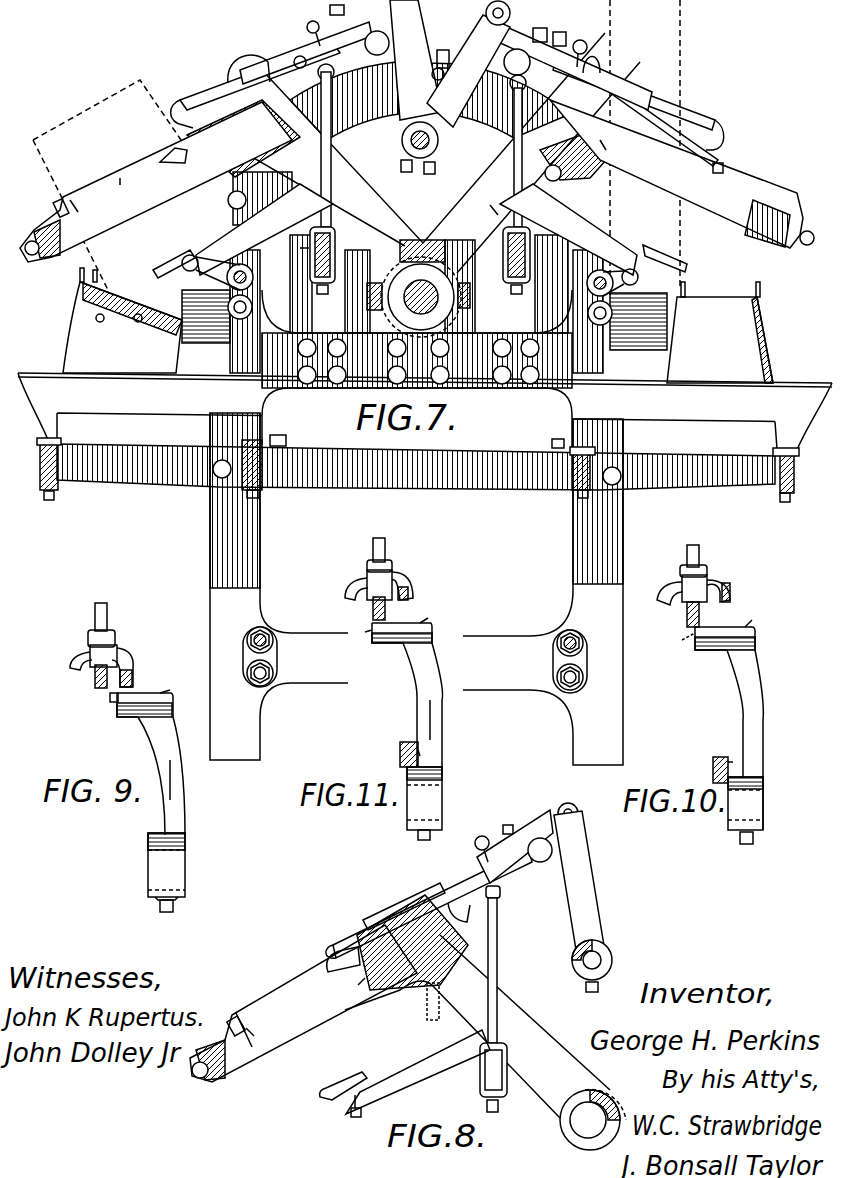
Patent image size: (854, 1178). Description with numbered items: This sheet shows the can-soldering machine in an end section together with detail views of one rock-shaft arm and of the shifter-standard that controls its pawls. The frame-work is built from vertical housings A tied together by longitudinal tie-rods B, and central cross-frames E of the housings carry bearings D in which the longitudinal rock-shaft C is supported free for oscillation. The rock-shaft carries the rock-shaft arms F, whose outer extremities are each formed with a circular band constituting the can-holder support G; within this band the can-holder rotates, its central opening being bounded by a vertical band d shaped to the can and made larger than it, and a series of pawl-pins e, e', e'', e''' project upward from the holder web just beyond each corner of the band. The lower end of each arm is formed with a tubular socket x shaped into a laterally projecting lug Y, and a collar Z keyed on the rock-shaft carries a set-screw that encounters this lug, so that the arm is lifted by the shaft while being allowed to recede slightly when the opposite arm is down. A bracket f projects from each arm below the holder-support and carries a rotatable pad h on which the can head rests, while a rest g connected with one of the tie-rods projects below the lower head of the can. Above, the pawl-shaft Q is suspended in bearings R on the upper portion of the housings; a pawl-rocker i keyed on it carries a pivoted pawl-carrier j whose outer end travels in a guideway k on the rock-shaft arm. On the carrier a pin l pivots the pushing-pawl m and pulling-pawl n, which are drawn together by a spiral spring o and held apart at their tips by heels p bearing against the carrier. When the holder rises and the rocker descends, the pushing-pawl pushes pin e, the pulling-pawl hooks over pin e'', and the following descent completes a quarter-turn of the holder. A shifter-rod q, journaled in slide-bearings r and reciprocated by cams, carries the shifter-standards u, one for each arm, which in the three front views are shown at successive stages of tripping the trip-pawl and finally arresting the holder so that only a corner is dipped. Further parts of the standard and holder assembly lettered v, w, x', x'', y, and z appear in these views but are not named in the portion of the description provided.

In FIG. 7, the vertical housing A is at (425, 382).
In FIG. 11, the vertical housing A is at (304, 735).
In FIG. 7, the tie-rod B is at (60, 465).
In FIG. 11, the tie-rod B is at (246, 638).
In FIG. 7, the rock-shaft C is at (421, 297).
In FIG. 8, the rock-shaft C is at (590, 1120).
In FIG. 7, the bearing D is at (468, 310).
In FIG. 7, the central cross-frame E is at (416, 411).
In FIG. 7, the rock-shaft arm F is at (413, 153).
In FIG. 11, the rock-shaft arm F is at (399, 755).
In FIG. 10, the rock-shaft arm F is at (712, 768).
In FIG. 8, the rock-shaft arm F is at (477, 1006).
In FIG. 7, the can-holder support G is at (417, 181).
In FIG. 8, the can-holder support G is at (303, 1003).
In FIG. 7, the pawl-shaft Q is at (440, 152).
In FIG. 7, the bearing R is at (400, 148).
In FIG. 7, the lug Y is at (460, 272).
In FIG. 8, the lug Y is at (625, 1090).
In FIG. 7, the collar Z is at (375, 312).
In FIG. 7, the vertical band d is at (433, 177).
In FIG. 8, the vertical band d is at (263, 1015).
In FIG. 7, the pawl-pin e is at (724, 171).
In FIG. 7, the pawl-pin e' is at (427, 213).
In FIG. 8, the pawl-pin e' is at (226, 1029).
In FIG. 7, the pawl-pin e'' is at (83, 202).
In FIG. 8, the pawl-pin e'' is at (255, 1036).
In FIG. 7, the pawl-pin e''' is at (617, 148).
In FIG. 8, the pawl-pin e''' is at (352, 985).
In FIG. 7, the bracket f is at (441, 229).
In FIG. 11, the bracket f is at (426, 748).
In FIG. 10, the bracket f is at (734, 757).
In FIG. 8, the bracket f is at (418, 1072).
In FIG. 7, the rest g is at (410, 275).
In FIG. 7, the rotatable pad h is at (170, 262).
In FIG. 8, the rotatable pad h is at (343, 1093).
In FIG. 7, the pawl-rocker i is at (515, 63).
In FIG. 8, the pawl-rocker i is at (583, 897).
In FIG. 7, the pawl-carrier j is at (446, 59).
In FIG. 9, the pawl-carrier j is at (108, 620).
In FIG. 11, the pawl-carrier j is at (385, 550).
In FIG. 10, the pawl-carrier j is at (699, 556).
In FIG. 8, the pawl-carrier j is at (515, 846).
In FIG. 7, the guideway k is at (416, 60).
In FIG. 8, the guideway k is at (462, 918).
In FIG. 7, the pin l is at (444, 23).
In FIG. 9, the pin l is at (88, 636).
In FIG. 11, the pin l is at (367, 564).
In FIG. 10, the pin l is at (680, 569).
In FIG. 8, the pin l is at (508, 825).
In FIG. 7, the pushing-pawl m is at (648, 120).
In FIG. 9, the pushing-pawl m is at (75, 667).
In FIG. 11, the pushing-pawl m is at (353, 596).
In FIG. 10, the pushing-pawl m is at (668, 600).
In FIG. 8, the pushing-pawl m is at (404, 918).
In FIG. 7, the pulling-pawl n is at (173, 164).
In FIG. 9, the pulling-pawl n is at (134, 655).
In FIG. 11, the pulling-pawl n is at (410, 572).
In FIG. 10, the pulling-pawl n is at (730, 600).
In FIG. 8, the pulling-pawl n is at (330, 958).
In FIG. 7, the spiral spring o is at (442, 44).
In FIG. 8, the spiral spring o is at (482, 841).
In FIG. 7, the heel p is at (540, 23).
In FIG. 7, the shifter-rod q is at (430, 170).
In FIG. 7, the slide-bearing r is at (400, 236).
In FIG. 8, the slide-bearing r is at (433, 1001).
In FIG. 7, the shifter-standard u is at (333, 150).
In FIG. 9, the shifter-standard u is at (170, 778).
In FIG. 11, the shifter-standard u is at (428, 720).
In FIG. 8, the shifter-standard u is at (487, 995).
In FIG. 7, the slide v is at (336, 252).
In FIG. 8, the slide v is at (480, 1075).
In FIG. 7, the slide block w is at (497, 203).
In FIG. 9, the slide block w is at (150, 835).
In FIG. 11, the slide block w is at (407, 773).
In FIG. 10, the slide block w is at (742, 776).
In FIG. 7, the tubular socket x is at (410, 76).
In FIG. 9, the tubular socket x is at (151, 764).
In FIG. 11, the tubular socket x is at (407, 695).
In FIG. 10, the tubular socket x is at (729, 728).
In FIG. 8, the tubular socket x is at (491, 899).
In FIG. 9, the tab x' is at (163, 686).
In FIG. 11, the tab x' is at (424, 615).
In FIG. 10, the tab x' is at (753, 618).
In FIG. 8, the tab x' is at (503, 889).
In FIG. 9, the notch x'' is at (107, 696).
In FIG. 11, the notch x'' is at (364, 631).
In FIG. 10, the notch x'' is at (683, 640).
In FIG. 7, the rod y is at (447, 86).
In FIG. 9, the rod y is at (166, 872).
In FIG. 11, the rod y is at (424, 803).
In FIG. 10, the rod y is at (745, 810).
In FIG. 8, the rod y is at (429, 903).
In FIG. 7, the hook z is at (453, 127).